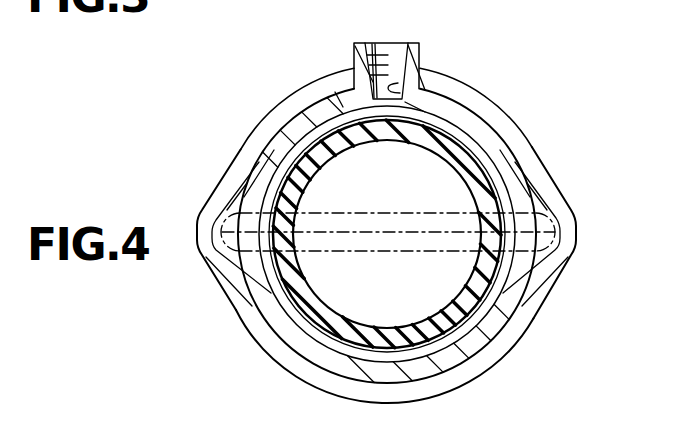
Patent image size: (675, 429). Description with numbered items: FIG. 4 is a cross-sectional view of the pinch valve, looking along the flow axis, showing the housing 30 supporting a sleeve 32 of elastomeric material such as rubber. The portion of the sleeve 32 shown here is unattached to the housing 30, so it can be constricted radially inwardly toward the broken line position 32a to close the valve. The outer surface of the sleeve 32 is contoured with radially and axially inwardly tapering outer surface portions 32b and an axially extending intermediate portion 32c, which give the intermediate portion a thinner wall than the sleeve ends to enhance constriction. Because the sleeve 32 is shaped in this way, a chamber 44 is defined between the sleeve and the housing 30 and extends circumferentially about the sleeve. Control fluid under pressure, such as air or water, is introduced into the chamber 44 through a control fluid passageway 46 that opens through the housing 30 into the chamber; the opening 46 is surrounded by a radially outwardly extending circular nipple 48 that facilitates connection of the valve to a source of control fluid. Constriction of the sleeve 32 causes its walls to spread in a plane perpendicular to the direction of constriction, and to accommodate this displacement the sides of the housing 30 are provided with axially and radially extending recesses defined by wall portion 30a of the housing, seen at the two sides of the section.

The housing 30 is at (489, 343).
The wall portion 30a is at (560, 210).
The sleeve 32 is at (467, 157).
The broken line position 32a is at (452, 190).
The tapering outer surface portions 32b is at (317, 129).
The intermediate portion 32c is at (297, 157).
The chamber 44 is at (460, 130).
The control fluid passageway 46 is at (393, 88).
The circular nipple 48 is at (418, 44).